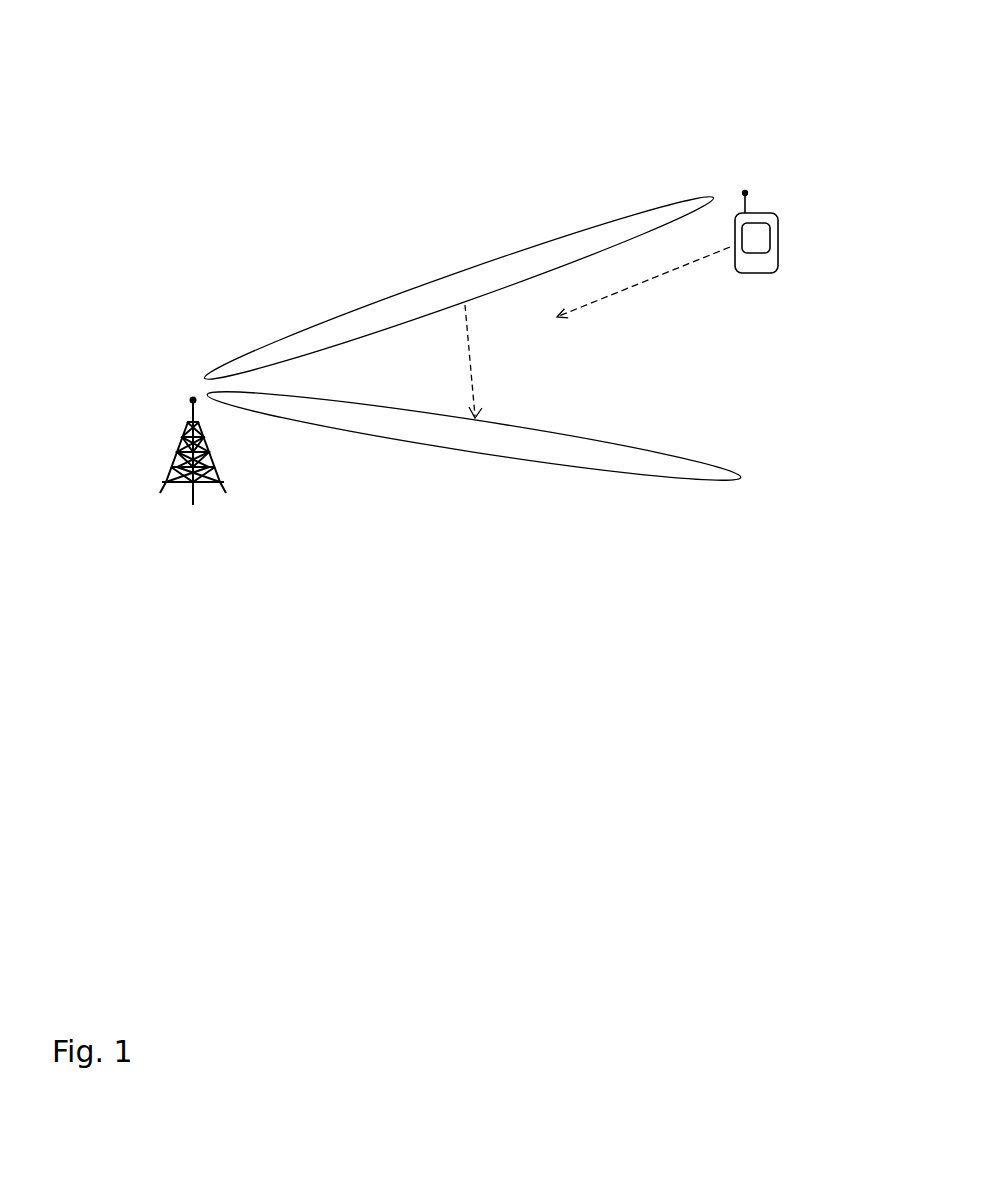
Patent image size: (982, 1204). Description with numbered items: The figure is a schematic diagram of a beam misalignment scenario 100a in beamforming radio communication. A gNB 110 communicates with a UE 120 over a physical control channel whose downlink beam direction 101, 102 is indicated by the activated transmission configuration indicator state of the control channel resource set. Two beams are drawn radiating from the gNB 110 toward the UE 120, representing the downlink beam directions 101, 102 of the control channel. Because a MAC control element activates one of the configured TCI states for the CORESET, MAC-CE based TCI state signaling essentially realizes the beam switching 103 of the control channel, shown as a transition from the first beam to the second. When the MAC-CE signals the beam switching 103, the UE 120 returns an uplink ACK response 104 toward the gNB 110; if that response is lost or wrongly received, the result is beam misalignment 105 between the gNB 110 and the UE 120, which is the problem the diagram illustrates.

The beam misalignment scenario 100a is at (316, 77).
The downlink beam direction 101 is at (451, 264).
The downlink beam direction 102 is at (466, 461).
The beam switching 103 is at (486, 373).
The uplink ACK response 104 is at (641, 338).
The beam misalignment 105 is at (808, 534).
The gNB 110 is at (192, 524).
The UE 120 is at (777, 282).